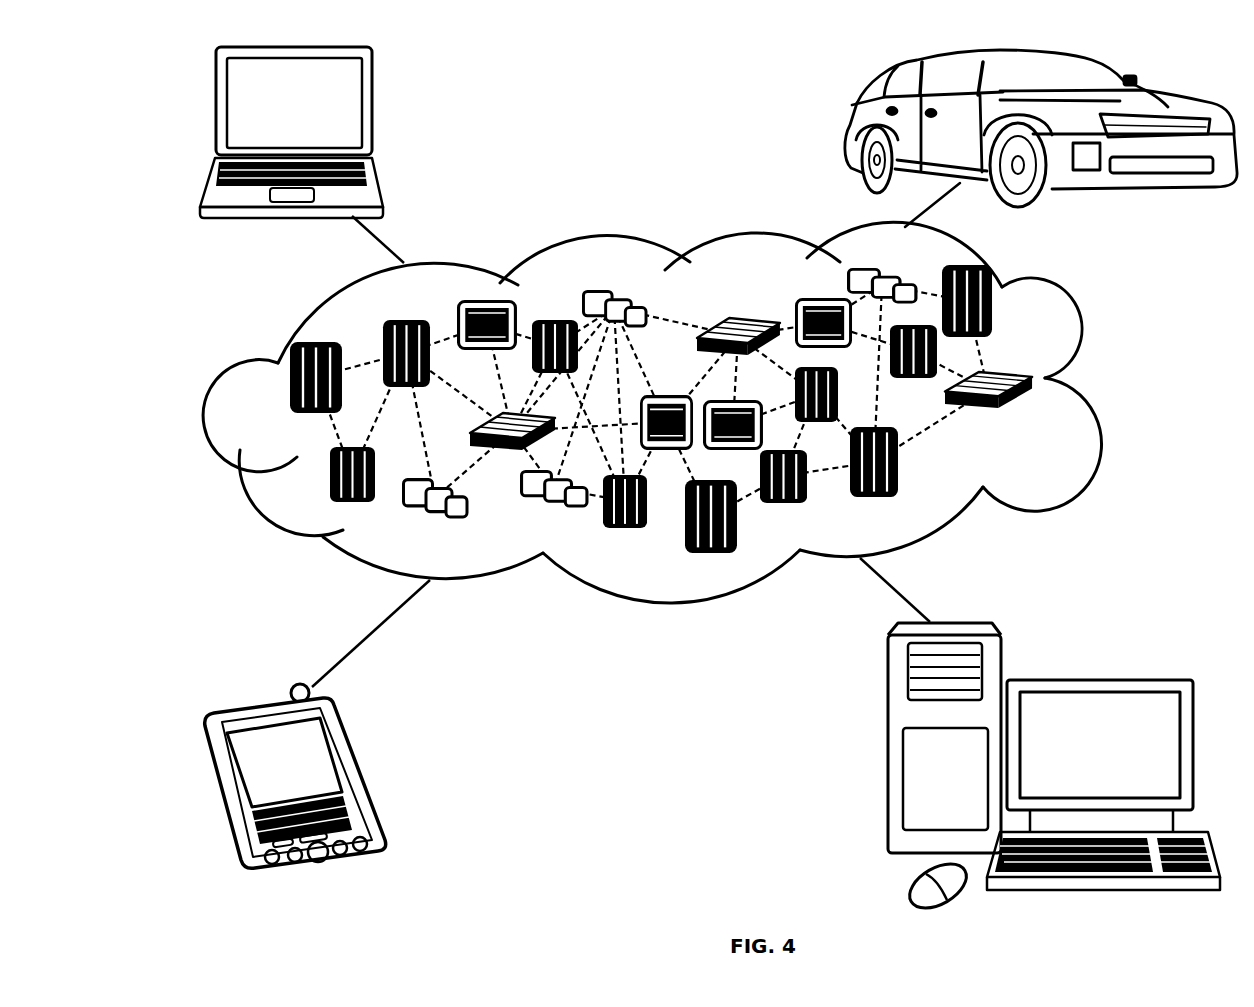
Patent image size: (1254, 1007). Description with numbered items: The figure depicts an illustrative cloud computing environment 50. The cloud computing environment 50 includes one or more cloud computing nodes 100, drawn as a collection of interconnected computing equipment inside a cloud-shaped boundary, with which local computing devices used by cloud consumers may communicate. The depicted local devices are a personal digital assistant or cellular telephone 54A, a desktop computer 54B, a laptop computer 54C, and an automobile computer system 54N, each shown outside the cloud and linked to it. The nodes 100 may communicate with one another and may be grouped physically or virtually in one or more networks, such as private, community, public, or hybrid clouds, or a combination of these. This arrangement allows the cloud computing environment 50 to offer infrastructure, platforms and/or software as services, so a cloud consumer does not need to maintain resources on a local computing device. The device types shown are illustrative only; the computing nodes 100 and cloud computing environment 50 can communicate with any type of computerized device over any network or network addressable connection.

The cloud computing environment 50 is at (1102, 385).
The cloud computing node 100 is at (1040, 420).
The personal digital assistant or cellular telephone 54A is at (355, 775).
The desktop computer 54B is at (1097, 680).
The laptop computer 54C is at (371, 112).
The automobile computer system 54N is at (856, 133).